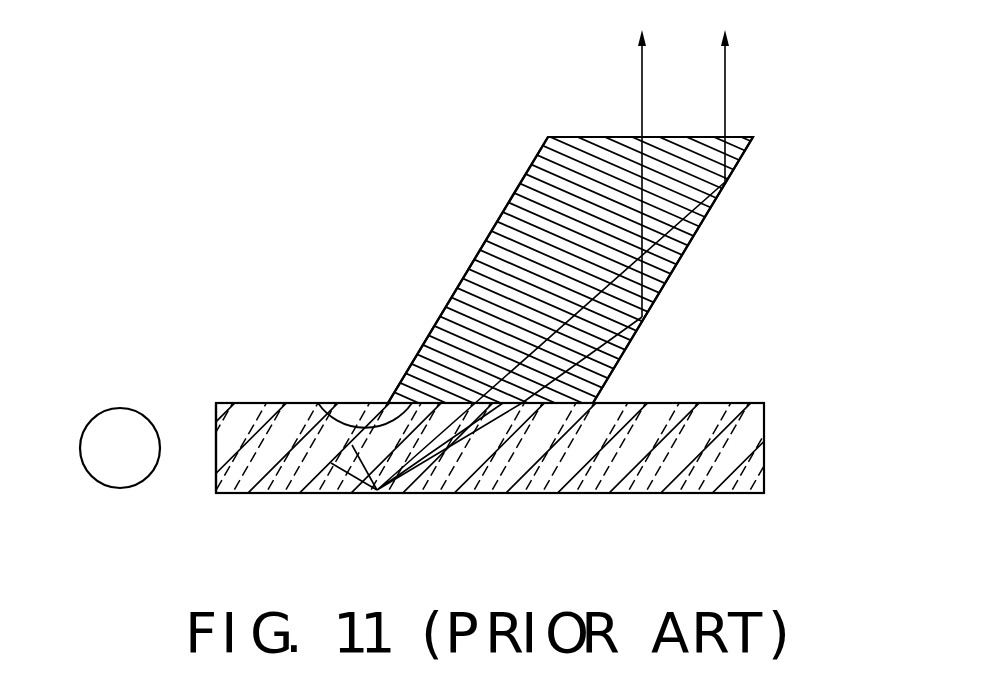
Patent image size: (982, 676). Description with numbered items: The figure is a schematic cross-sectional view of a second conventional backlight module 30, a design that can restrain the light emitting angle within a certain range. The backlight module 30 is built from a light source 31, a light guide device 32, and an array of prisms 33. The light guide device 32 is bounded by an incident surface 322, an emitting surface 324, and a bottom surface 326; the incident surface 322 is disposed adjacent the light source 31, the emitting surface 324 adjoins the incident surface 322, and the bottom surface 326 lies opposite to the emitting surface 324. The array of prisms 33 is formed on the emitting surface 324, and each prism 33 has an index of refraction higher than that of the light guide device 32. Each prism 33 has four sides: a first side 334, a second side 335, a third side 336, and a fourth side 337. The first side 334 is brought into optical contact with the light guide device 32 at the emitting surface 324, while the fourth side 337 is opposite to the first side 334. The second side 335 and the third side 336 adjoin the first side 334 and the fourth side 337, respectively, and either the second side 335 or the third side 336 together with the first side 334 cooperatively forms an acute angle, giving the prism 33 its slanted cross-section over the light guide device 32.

The backlight module 30 is at (405, 36).
The light source 31 is at (118, 428).
The light guide device 32 is at (705, 470).
The incident surface 322 is at (213, 432).
The emitting surface 324 is at (681, 400).
The bottom surface 326 is at (447, 494).
The prism 33 is at (516, 238).
The first side 334 is at (321, 403).
The second side 335 is at (457, 288).
The third side 336 is at (700, 226).
The fourth side 337 is at (558, 136).